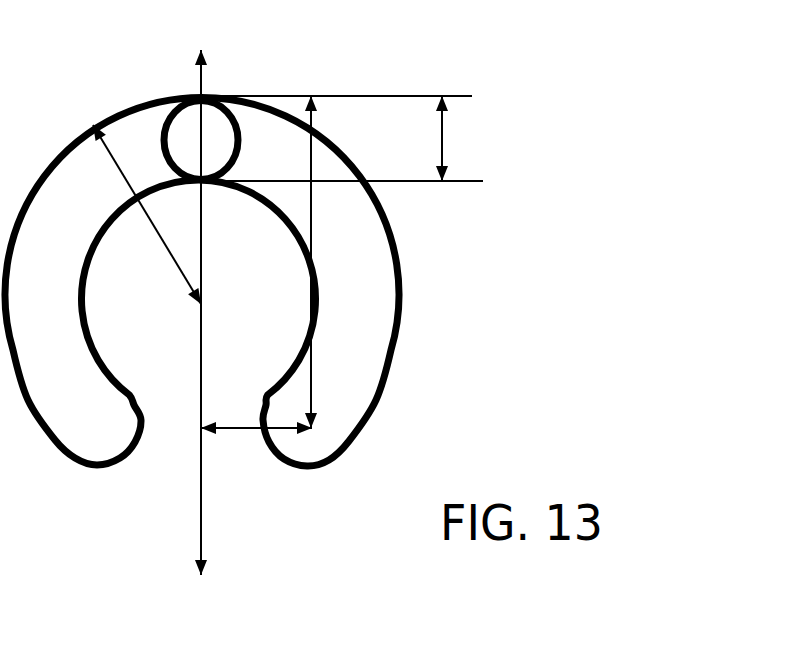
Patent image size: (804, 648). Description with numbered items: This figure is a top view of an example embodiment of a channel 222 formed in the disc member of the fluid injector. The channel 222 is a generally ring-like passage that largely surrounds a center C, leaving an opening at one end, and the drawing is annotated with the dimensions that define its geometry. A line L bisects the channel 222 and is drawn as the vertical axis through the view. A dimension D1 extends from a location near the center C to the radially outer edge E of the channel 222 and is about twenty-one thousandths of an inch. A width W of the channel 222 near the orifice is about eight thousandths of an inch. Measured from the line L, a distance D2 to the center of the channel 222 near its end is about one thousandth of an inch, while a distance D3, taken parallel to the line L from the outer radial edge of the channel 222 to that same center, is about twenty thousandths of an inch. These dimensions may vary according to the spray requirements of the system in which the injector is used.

The channel 222 is at (399, 319).
The line L is at (203, 315).
The center C is at (216, 327).
The radially outer edge E is at (81, 99).
The dimension D1 is at (147, 214).
The distance D2 is at (256, 443).
The distance D3 is at (332, 262).
The width W is at (342, 138).